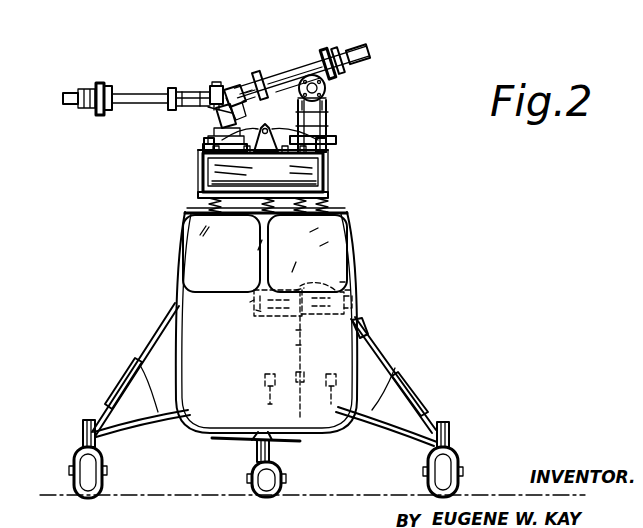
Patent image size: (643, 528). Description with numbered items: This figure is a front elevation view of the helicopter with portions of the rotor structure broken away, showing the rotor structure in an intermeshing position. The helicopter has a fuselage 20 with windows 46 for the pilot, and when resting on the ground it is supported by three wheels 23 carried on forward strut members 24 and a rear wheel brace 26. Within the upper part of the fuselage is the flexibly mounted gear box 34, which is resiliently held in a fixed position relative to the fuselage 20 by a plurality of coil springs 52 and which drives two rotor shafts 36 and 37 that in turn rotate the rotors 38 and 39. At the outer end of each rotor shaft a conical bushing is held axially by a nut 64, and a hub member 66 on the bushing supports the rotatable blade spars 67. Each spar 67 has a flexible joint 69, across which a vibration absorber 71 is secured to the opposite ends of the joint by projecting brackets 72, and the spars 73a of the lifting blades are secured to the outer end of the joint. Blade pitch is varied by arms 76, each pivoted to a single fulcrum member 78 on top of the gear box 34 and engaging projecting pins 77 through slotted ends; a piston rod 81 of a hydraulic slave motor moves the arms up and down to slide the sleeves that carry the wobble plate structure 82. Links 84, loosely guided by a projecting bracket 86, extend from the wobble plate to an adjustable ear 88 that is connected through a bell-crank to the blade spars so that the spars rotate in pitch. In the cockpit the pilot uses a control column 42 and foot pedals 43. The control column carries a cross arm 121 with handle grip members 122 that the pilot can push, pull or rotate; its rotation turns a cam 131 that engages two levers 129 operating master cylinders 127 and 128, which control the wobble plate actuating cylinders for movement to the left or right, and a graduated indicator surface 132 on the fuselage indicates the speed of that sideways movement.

The fuselage 20 is at (356, 298).
The wheels 23 is at (86, 494).
The forward strut members 24 is at (138, 372).
The rear wheel brace 26 is at (296, 442).
The gear box 34 is at (322, 194).
The rotor shaft 36 is at (322, 130).
The rotor shaft 37 is at (220, 118).
The rotor 38 is at (328, 86).
The rotor 39 is at (194, 83).
The control column 42 is at (366, 338).
The foot pedals 43 is at (266, 384).
The windows 46 is at (296, 243).
The springs 52 is at (206, 208).
The nut 64 is at (230, 96).
The hub member 66 is at (208, 94).
The blade spar 67 is at (140, 100).
The flexible joint 69 is at (103, 86).
The vibration absorber 71 is at (340, 58).
The projecting brackets 72 is at (302, 74).
The blade spar 73a is at (71, 90).
The arm 76 is at (272, 134).
The projecting pins 77 is at (210, 160).
The fulcrum member 78 is at (263, 169).
The piston rod 81 is at (255, 140).
The wobble plate structure 82 is at (212, 142).
The link 84 is at (200, 110).
The projecting bracket 86 is at (332, 130).
The adjustable ear 88 is at (252, 82).
The cross arm 121 is at (334, 306).
The handle grip members 122 is at (264, 302).
The master cylinder 127 is at (350, 290).
The master cylinder 128 is at (268, 316).
The levers 129 is at (342, 282).
The cam 131 is at (302, 316).
The graduated indicator surface 132 is at (304, 294).